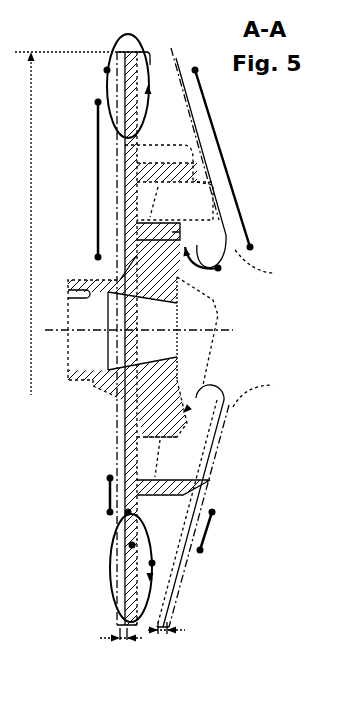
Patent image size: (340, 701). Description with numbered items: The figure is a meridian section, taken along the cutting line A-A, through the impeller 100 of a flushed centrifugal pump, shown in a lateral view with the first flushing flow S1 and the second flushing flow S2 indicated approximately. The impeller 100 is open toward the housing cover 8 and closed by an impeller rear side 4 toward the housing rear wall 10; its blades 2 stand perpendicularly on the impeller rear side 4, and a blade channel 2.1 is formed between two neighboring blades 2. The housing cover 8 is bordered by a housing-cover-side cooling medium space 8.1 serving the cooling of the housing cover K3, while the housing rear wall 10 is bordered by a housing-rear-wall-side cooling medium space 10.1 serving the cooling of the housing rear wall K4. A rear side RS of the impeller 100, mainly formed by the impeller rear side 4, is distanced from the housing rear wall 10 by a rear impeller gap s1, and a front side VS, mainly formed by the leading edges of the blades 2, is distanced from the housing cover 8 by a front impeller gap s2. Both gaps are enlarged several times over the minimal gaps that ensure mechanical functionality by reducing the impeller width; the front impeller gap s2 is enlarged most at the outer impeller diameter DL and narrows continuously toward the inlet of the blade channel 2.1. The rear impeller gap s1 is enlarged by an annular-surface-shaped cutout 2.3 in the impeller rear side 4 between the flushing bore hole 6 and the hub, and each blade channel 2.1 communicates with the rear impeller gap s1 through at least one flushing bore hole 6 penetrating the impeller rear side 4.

The impeller 100 is at (218, 497).
The housing rear wall 10 is at (117, 422).
The housing-rear-wall-side cooling medium space 10.1 is at (71, 338).
The rear side RS is at (114, 450).
The blades 2 is at (197, 487).
The blade channel 2.1 is at (160, 540).
The annular-surface-shaped cutout 2.3 is at (107, 368).
The housing cover 8 is at (228, 423).
The housing-cover-side cooling medium space 8.1 is at (221, 506).
The flushing bore hole 6 is at (128, 512).
The impeller rear side 4 is at (132, 545).
The cooling of the housing cover K3 is at (235, 175).
The cooling of the housing rear wall K4 is at (98, 167).
The first flushing flow S1 is at (107, 70).
The second flushing flow S2 is at (183, 413).
The front side VS is at (220, 127).
The outer impeller diameter DL is at (81, 223).
The rear impeller gap s1 is at (120, 630).
The front impeller gap s2 is at (167, 627).